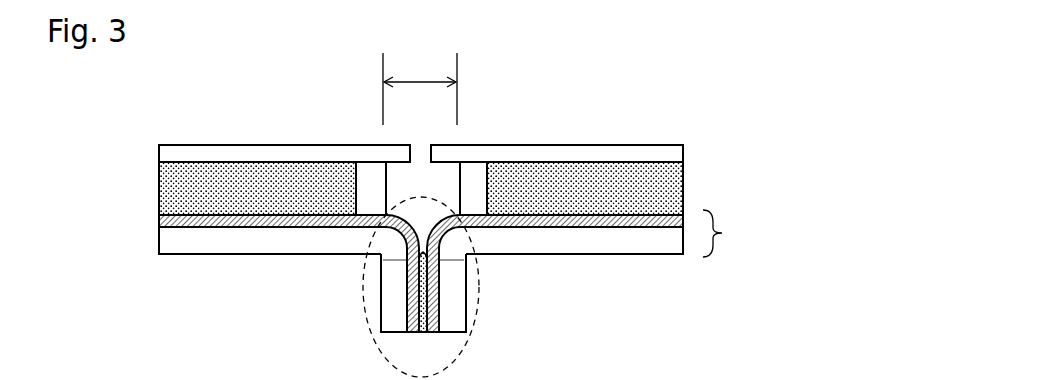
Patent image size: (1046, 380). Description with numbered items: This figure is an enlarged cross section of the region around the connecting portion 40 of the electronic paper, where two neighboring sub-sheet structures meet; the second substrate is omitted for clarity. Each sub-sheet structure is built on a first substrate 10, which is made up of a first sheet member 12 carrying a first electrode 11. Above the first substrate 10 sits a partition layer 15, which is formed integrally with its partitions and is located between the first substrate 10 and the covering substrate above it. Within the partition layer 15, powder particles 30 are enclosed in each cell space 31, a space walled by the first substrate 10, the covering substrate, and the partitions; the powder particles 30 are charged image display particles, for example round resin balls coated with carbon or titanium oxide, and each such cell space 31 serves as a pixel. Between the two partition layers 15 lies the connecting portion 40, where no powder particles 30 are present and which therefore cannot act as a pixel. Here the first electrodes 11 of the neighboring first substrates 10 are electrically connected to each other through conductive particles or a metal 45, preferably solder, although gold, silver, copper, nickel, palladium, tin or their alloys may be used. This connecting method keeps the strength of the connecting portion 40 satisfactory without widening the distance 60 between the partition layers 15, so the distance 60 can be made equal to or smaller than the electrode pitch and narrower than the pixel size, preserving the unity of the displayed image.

The first substrate 10 is at (741, 233).
The first electrode 11 is at (160, 228).
The first sheet member 12 is at (247, 237).
The partition layer 15 is at (138, 192).
The powder particles 30 is at (250, 180).
The cell space 31 is at (222, 193).
The connecting portion 40 is at (479, 288).
The conductive particles or metal 45 is at (407, 325).
The distance between the partition layers 60 is at (420, 84).